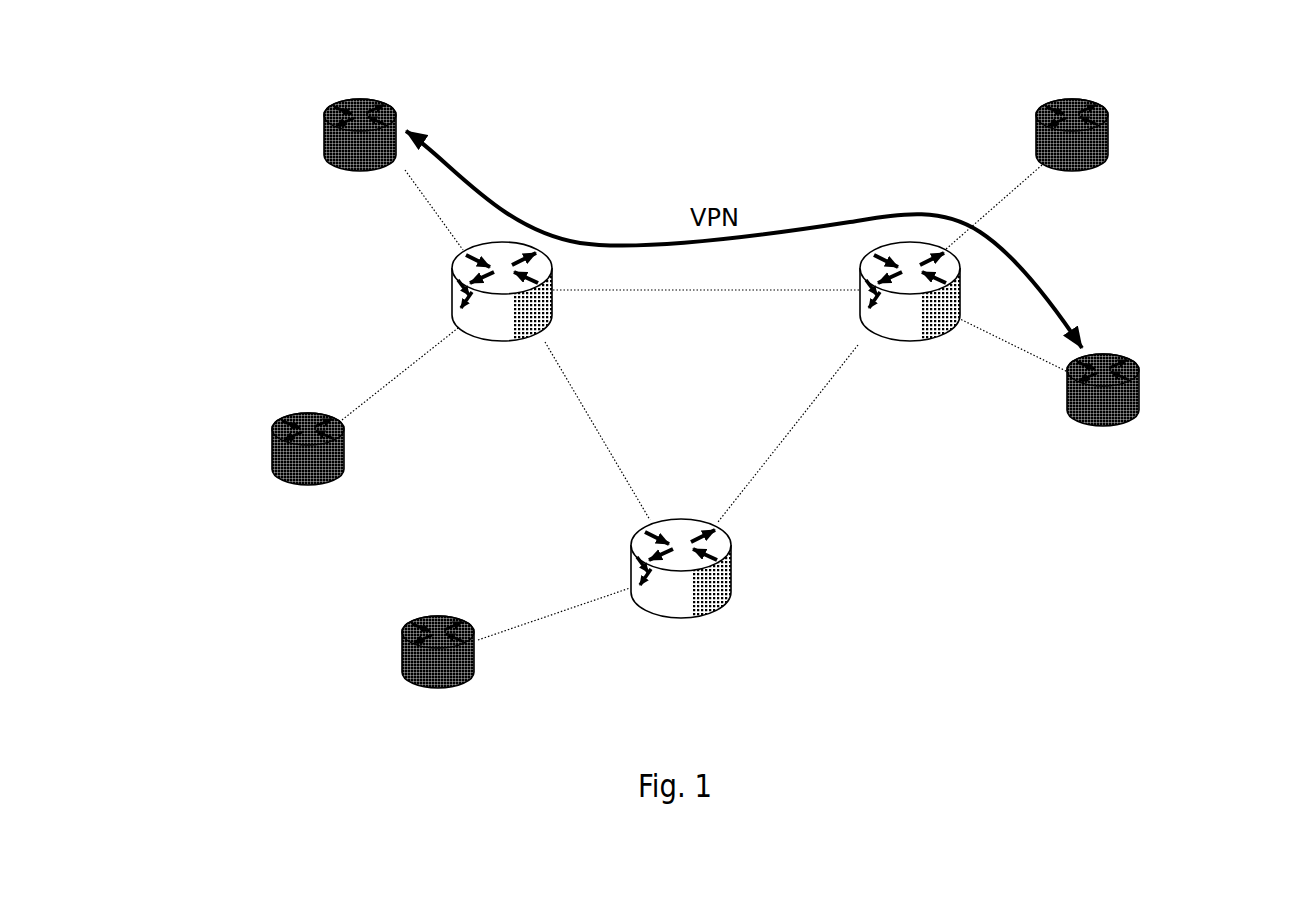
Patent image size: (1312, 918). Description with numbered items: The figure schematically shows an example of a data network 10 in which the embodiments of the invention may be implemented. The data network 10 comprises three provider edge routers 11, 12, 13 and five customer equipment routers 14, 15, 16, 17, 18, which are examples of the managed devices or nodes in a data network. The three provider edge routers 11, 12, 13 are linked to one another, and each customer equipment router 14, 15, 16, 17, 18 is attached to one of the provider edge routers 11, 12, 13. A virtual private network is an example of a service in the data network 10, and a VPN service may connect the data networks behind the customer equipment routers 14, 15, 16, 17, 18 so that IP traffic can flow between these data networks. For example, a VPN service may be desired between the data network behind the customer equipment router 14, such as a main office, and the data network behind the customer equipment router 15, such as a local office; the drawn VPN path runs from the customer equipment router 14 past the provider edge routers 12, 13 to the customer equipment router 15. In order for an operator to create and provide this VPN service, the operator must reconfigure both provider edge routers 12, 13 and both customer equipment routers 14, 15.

The data network 10 is at (308, 259).
The provider edge router 11 is at (716, 497).
The provider edge router 12 is at (580, 290).
The provider edge router 13 is at (900, 302).
The customer equipment router 14 is at (413, 73).
The customer equipment router 15 is at (1208, 352).
The customer equipment router 16 is at (362, 432).
The customer equipment router 17 is at (500, 655).
The customer equipment router 18 is at (1100, 80).